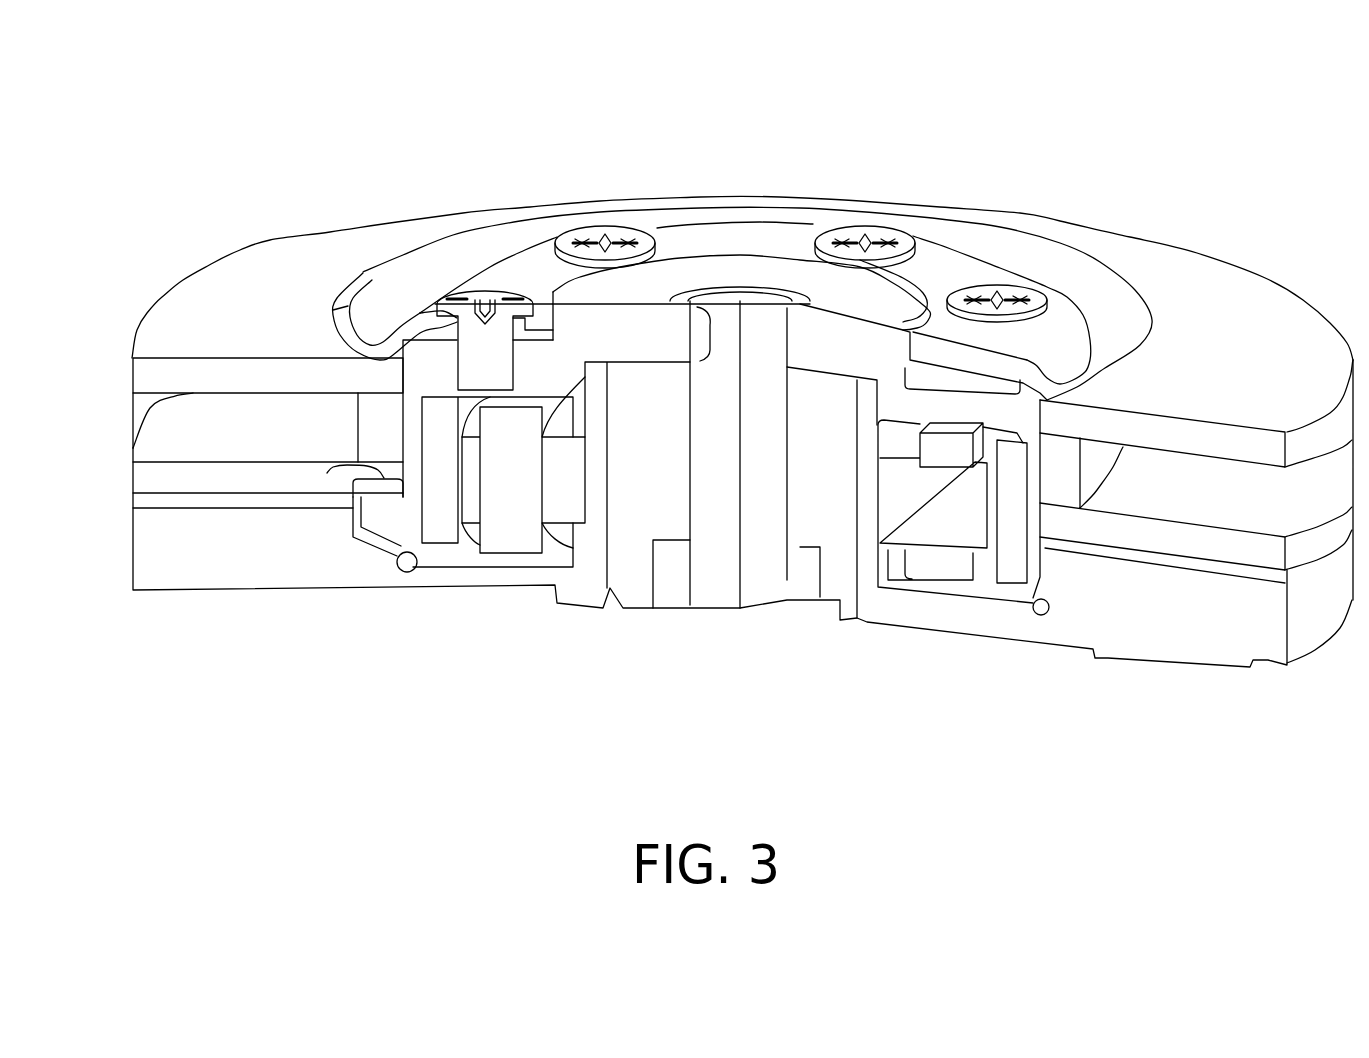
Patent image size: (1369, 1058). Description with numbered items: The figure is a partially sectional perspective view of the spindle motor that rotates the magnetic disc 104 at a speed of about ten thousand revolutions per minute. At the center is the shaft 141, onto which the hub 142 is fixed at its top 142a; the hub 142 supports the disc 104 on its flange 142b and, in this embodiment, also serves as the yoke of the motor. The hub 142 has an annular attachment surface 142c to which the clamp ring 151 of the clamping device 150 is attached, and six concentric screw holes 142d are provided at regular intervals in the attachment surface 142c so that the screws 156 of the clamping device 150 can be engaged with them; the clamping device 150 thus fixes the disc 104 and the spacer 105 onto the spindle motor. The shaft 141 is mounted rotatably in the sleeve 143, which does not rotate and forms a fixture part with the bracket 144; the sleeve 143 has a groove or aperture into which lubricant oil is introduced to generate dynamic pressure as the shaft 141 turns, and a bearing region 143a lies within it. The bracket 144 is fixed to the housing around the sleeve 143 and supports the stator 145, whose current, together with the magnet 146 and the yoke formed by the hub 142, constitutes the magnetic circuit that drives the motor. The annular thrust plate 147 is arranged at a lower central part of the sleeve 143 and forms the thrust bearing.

The magnetic disc 104 is at (215, 245).
The spacer 105 is at (347, 427).
The shaft 141 is at (746, 292).
The hub 142 is at (978, 368).
The top 142a is at (737, 296).
The flange 142b is at (327, 473).
The annular attachment surface 142c is at (953, 399).
The screw holes 142d is at (417, 330).
The sleeve 143 is at (630, 560).
The bearing 143a is at (687, 470).
The bracket 144 is at (218, 600).
The stator 145 is at (940, 530).
The magnet 146 is at (1010, 567).
The thrust plate 147 is at (803, 580).
The clamping device 150 is at (801, 190).
The clamp ring 151 is at (997, 215).
The screws 156 is at (870, 228).